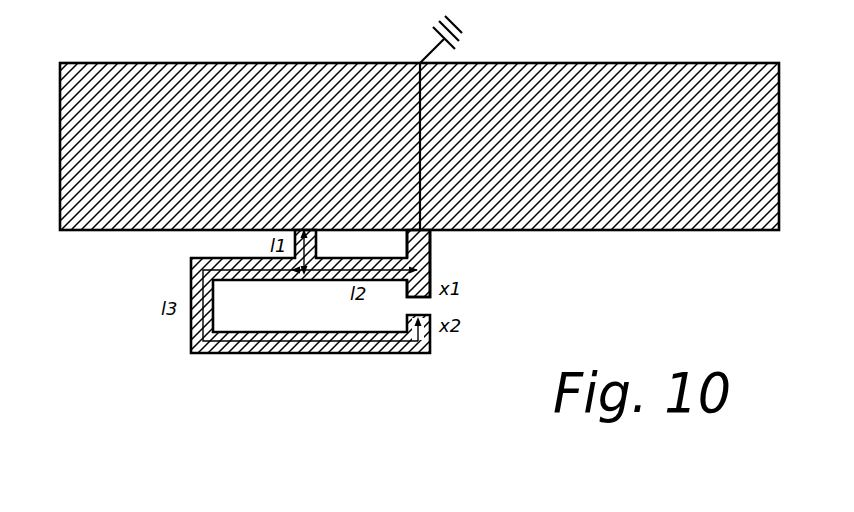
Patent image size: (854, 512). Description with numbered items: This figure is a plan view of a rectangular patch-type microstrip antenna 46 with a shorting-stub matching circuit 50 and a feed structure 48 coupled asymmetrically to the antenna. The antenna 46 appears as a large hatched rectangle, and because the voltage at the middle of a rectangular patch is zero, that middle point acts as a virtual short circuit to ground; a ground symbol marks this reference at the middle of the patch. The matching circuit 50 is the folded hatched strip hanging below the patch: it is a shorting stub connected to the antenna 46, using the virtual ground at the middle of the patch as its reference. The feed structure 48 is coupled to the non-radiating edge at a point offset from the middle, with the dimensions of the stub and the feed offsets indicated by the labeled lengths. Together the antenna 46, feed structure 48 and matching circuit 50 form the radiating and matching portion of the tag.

The microstrip antenna 46 is at (617, 72).
The feed structure 48 is at (445, 250).
The matching circuit 50 is at (222, 365).